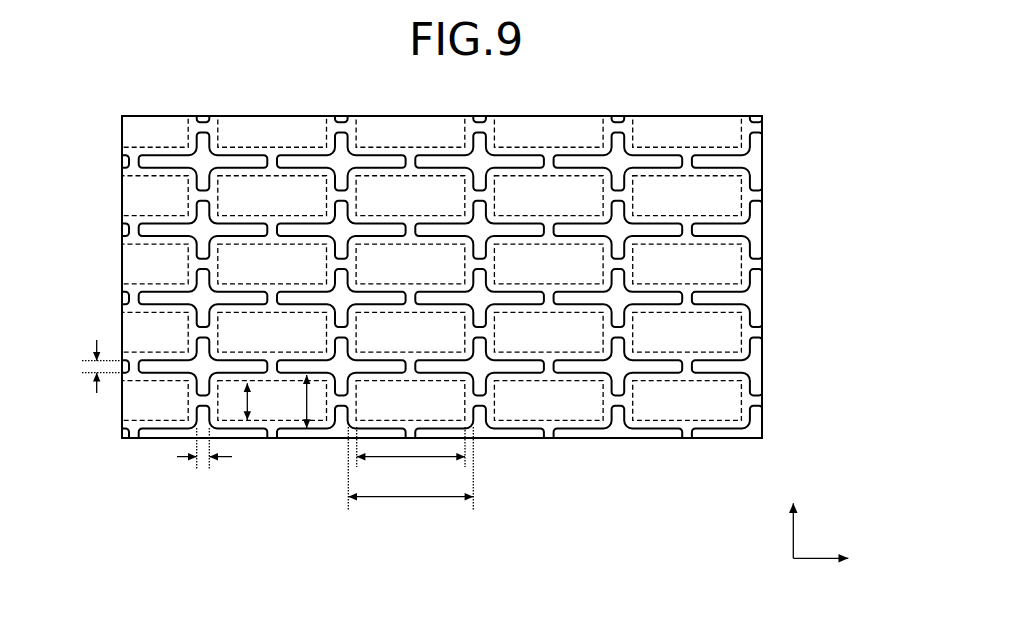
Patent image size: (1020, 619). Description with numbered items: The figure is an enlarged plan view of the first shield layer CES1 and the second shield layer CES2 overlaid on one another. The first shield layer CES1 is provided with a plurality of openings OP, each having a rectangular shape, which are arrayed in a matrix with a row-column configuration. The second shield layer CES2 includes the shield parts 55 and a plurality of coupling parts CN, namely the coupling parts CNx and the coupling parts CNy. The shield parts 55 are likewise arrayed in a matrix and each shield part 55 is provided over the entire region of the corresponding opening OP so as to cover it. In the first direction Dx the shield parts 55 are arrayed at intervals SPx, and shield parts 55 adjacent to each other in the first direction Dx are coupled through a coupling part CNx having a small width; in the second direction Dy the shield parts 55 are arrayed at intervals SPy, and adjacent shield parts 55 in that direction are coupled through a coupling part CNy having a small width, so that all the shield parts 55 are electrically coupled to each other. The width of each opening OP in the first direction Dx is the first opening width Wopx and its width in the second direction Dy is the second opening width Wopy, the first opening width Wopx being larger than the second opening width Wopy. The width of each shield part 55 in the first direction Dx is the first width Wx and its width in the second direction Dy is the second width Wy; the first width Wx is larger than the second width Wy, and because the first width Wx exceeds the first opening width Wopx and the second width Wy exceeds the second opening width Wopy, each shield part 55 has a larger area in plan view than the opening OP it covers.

The first shield layer CES1 is at (762, 157).
The second shield layer CES2 is at (833, 226).
The opening OP is at (731, 204).
The shield part 55 is at (748, 222).
The coupling part CN is at (750, 230).
The coupling part CNy is at (748, 366).
The coupling part CNx is at (615, 439).
The interval SPy is at (94, 366).
The interval SPx is at (198, 470).
The second opening width Wopy is at (247, 402).
The second width Wy is at (307, 402).
The first opening width Wopx is at (411, 457).
The first width Wx is at (410, 477).
The second direction Dy is at (794, 517).
The first direction Dx is at (838, 560).